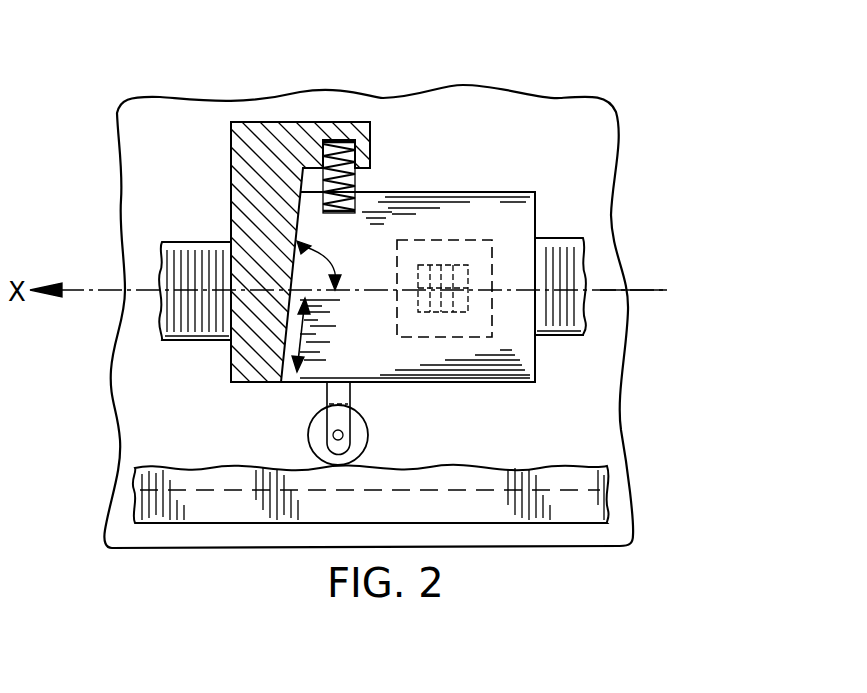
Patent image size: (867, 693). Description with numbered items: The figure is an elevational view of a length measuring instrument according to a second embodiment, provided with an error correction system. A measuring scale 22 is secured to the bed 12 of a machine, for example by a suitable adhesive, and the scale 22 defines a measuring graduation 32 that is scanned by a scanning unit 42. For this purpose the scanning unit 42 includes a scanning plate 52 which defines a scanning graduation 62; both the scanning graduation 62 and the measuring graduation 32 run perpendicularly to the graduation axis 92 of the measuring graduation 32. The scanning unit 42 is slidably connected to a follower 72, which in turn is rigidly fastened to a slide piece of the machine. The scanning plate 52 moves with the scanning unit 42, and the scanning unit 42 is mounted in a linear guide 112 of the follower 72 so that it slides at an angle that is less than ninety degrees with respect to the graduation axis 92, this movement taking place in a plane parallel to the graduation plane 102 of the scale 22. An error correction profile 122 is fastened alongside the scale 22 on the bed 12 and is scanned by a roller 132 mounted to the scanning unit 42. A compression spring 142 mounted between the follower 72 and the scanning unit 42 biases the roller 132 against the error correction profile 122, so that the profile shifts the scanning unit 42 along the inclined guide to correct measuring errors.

The bed 12 is at (606, 400).
The measuring scale 22 is at (176, 331).
The measuring graduation 32 is at (172, 272).
The scanning unit 42 is at (467, 203).
The scanning plate 52 is at (476, 253).
The scanning graduation 62 is at (458, 302).
The follower 72 is at (250, 365).
The graduation axis 92 is at (640, 290).
The graduation plane 102 is at (172, 243).
The linear guide 112 is at (281, 384).
The error correction profile 122 is at (578, 463).
The roller 132 is at (309, 438).
The compression spring 142 is at (356, 191).